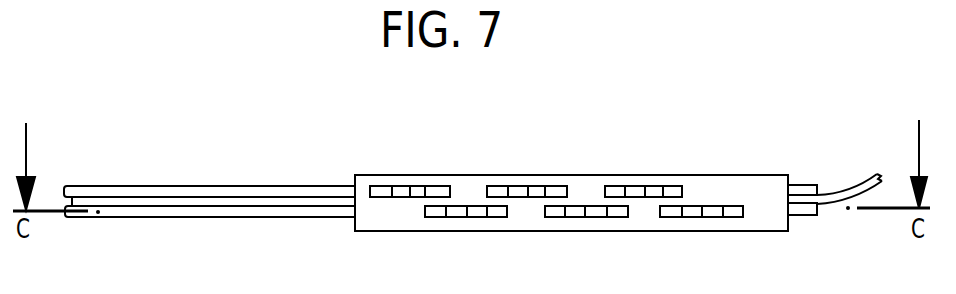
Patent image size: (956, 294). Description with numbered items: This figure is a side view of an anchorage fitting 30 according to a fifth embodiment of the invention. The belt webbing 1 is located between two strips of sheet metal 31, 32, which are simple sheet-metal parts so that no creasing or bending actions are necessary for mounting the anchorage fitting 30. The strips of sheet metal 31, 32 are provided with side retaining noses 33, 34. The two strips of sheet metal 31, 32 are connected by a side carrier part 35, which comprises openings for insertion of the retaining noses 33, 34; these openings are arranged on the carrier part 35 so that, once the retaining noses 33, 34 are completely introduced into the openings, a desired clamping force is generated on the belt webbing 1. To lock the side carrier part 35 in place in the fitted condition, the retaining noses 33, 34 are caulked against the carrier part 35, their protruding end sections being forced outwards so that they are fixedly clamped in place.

The belt webbing 1 is at (842, 195).
The anchorage fitting 30 is at (713, 150).
The strip of sheet metal 31 is at (167, 217).
The strip of sheet metal 32 is at (163, 186).
The retaining noses 33 is at (477, 212).
The retaining noses 34 is at (415, 188).
The side carrier part 35 is at (770, 208).